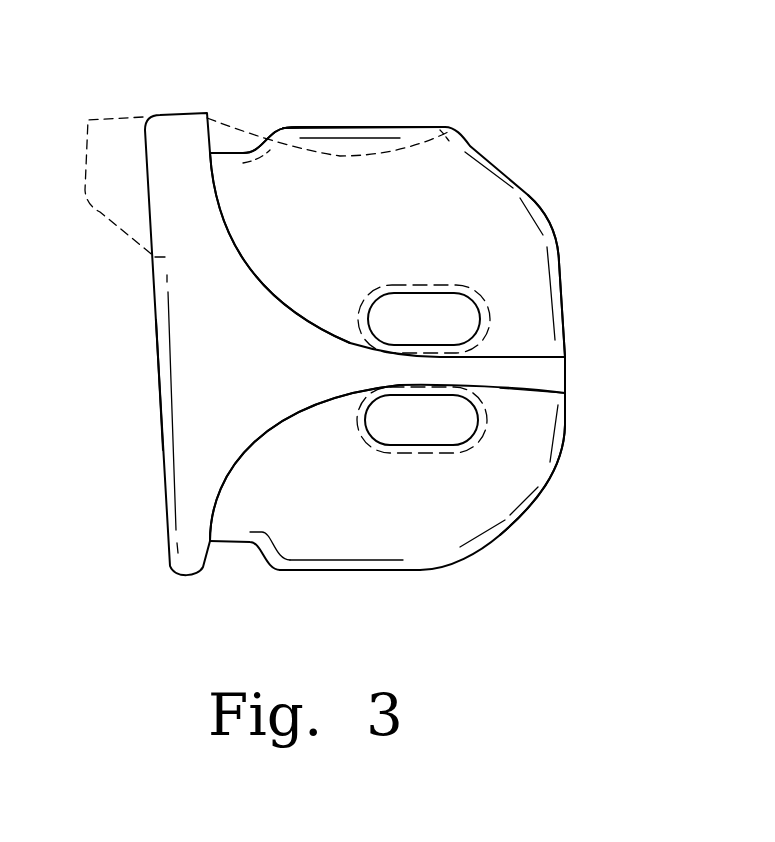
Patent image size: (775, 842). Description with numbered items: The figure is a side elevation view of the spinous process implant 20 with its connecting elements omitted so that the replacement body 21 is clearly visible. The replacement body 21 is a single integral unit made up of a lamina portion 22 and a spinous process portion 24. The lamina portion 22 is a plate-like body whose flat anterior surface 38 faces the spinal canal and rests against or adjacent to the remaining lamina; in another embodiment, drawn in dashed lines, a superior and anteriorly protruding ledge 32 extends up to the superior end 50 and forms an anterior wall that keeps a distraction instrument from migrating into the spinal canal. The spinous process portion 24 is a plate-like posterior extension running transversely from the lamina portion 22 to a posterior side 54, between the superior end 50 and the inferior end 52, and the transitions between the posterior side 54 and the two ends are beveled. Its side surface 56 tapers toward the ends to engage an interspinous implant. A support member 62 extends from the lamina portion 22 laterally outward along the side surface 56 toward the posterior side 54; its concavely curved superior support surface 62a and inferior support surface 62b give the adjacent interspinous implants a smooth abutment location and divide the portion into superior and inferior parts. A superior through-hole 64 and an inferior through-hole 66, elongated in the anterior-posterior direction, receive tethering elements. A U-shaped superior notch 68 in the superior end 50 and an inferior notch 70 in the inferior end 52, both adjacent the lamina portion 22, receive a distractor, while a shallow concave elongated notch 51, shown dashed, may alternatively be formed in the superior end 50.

The spinous process implant 20 is at (603, 137).
The replacement body 21 is at (512, 548).
The lamina portion 22 is at (155, 257).
The spinous process portion 24 is at (560, 303).
The ledge 32 is at (92, 206).
The flat anterior surface 38 is at (163, 443).
The superior end 50 is at (375, 127).
The concave elongated notch 51 is at (423, 127).
The inferior end 52 is at (342, 572).
The posterior side 54 is at (562, 262).
The side surface 56 is at (497, 501).
The support member 62 is at (520, 363).
The superior support surface 62a is at (316, 328).
The inferior support surface 62b is at (273, 433).
The superior through-hole 64 is at (423, 300).
The inferior through-hole 66 is at (478, 422).
The superior notch 68 is at (230, 152).
The inferior notch 70 is at (228, 545).